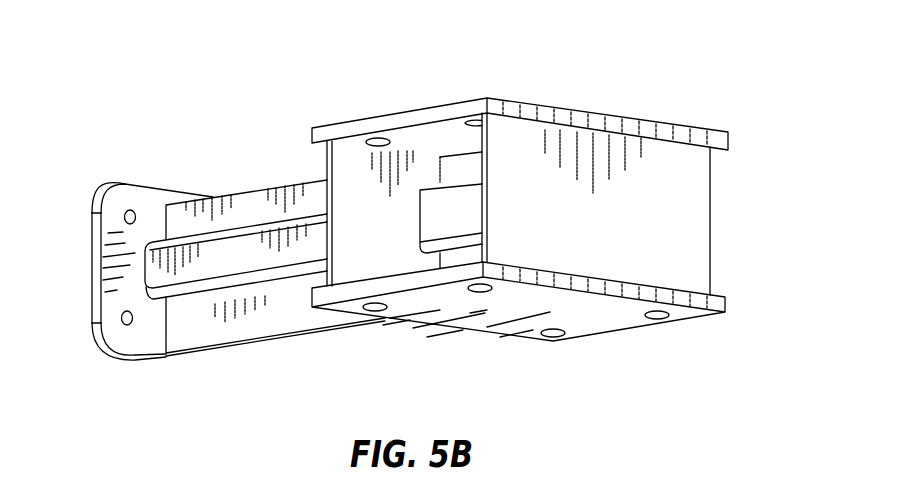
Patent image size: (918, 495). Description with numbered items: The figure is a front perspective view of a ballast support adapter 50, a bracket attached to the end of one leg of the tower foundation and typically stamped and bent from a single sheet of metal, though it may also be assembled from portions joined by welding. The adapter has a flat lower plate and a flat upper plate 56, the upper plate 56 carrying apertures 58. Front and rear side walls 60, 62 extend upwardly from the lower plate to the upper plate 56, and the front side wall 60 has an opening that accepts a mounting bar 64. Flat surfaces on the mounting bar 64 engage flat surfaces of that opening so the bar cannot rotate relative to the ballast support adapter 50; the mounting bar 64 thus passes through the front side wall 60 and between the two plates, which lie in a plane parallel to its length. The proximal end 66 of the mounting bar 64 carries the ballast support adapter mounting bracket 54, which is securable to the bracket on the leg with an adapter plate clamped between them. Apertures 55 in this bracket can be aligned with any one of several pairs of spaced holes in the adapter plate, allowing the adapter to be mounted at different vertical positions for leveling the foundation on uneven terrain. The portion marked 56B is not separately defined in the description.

The ballast support adapter 50 is at (138, 75).
The mounting bracket 54 is at (143, 342).
The apertures 55 is at (133, 210).
The upper plate 56 is at (452, 208).
The lower rail portion 56B is at (275, 326).
The apertures 58 is at (598, 117).
The front side wall 60 is at (608, 315).
The rear side wall 62 is at (376, 311).
The mounting bar 64 is at (683, 235).
The proximal end 66 is at (348, 172).